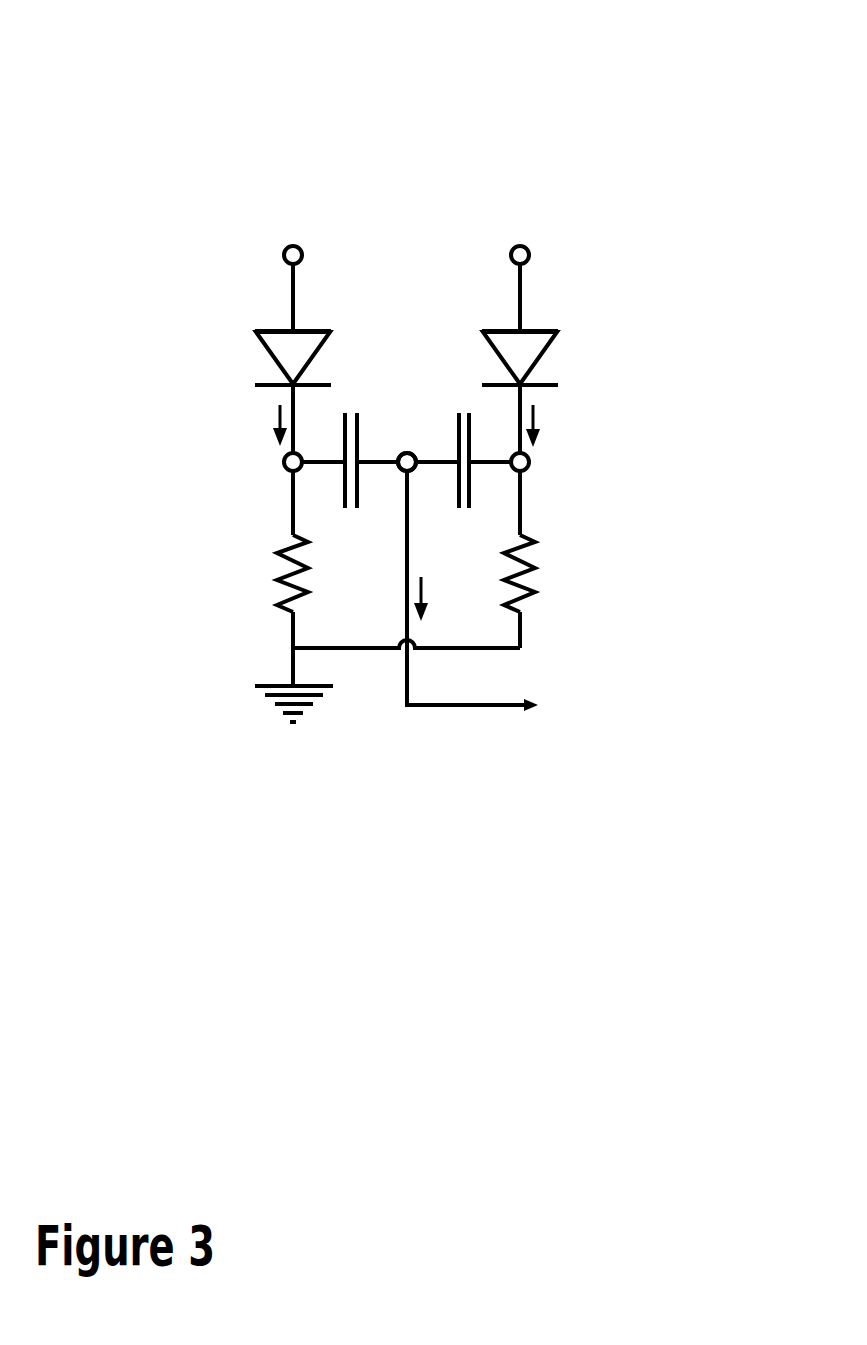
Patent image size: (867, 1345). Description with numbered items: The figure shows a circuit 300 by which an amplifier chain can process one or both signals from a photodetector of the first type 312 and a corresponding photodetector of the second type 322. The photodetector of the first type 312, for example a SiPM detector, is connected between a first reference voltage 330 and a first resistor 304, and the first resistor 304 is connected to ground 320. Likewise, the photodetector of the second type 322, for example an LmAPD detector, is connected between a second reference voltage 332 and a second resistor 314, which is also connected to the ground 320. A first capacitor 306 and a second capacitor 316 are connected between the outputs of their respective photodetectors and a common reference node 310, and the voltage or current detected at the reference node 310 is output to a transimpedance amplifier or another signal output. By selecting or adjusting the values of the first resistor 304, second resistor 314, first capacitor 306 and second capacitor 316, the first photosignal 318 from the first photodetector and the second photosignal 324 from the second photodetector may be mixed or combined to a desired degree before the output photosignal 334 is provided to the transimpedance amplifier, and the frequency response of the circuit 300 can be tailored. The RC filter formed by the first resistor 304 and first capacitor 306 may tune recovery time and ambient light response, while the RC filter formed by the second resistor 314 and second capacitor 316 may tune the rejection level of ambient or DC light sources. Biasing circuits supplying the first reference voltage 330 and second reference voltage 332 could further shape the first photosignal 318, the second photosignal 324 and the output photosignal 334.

The circuit 300 is at (723, 83).
The first resistor 304 is at (282, 573).
The first capacitor 306 is at (356, 413).
The reference node 310 is at (404, 473).
The photodetector of the first type 312 is at (266, 329).
The second resistor 314 is at (510, 573).
The second capacitor 316 is at (458, 421).
The first photosignal 318 is at (277, 424).
The ground 320 is at (280, 684).
The photodetector of the second type 322 is at (491, 329).
The second photosignal 324 is at (536, 425).
The first reference voltage 330 is at (322, 219).
The second reference voltage 332 is at (548, 219).
The output photosignal 334 is at (424, 598).